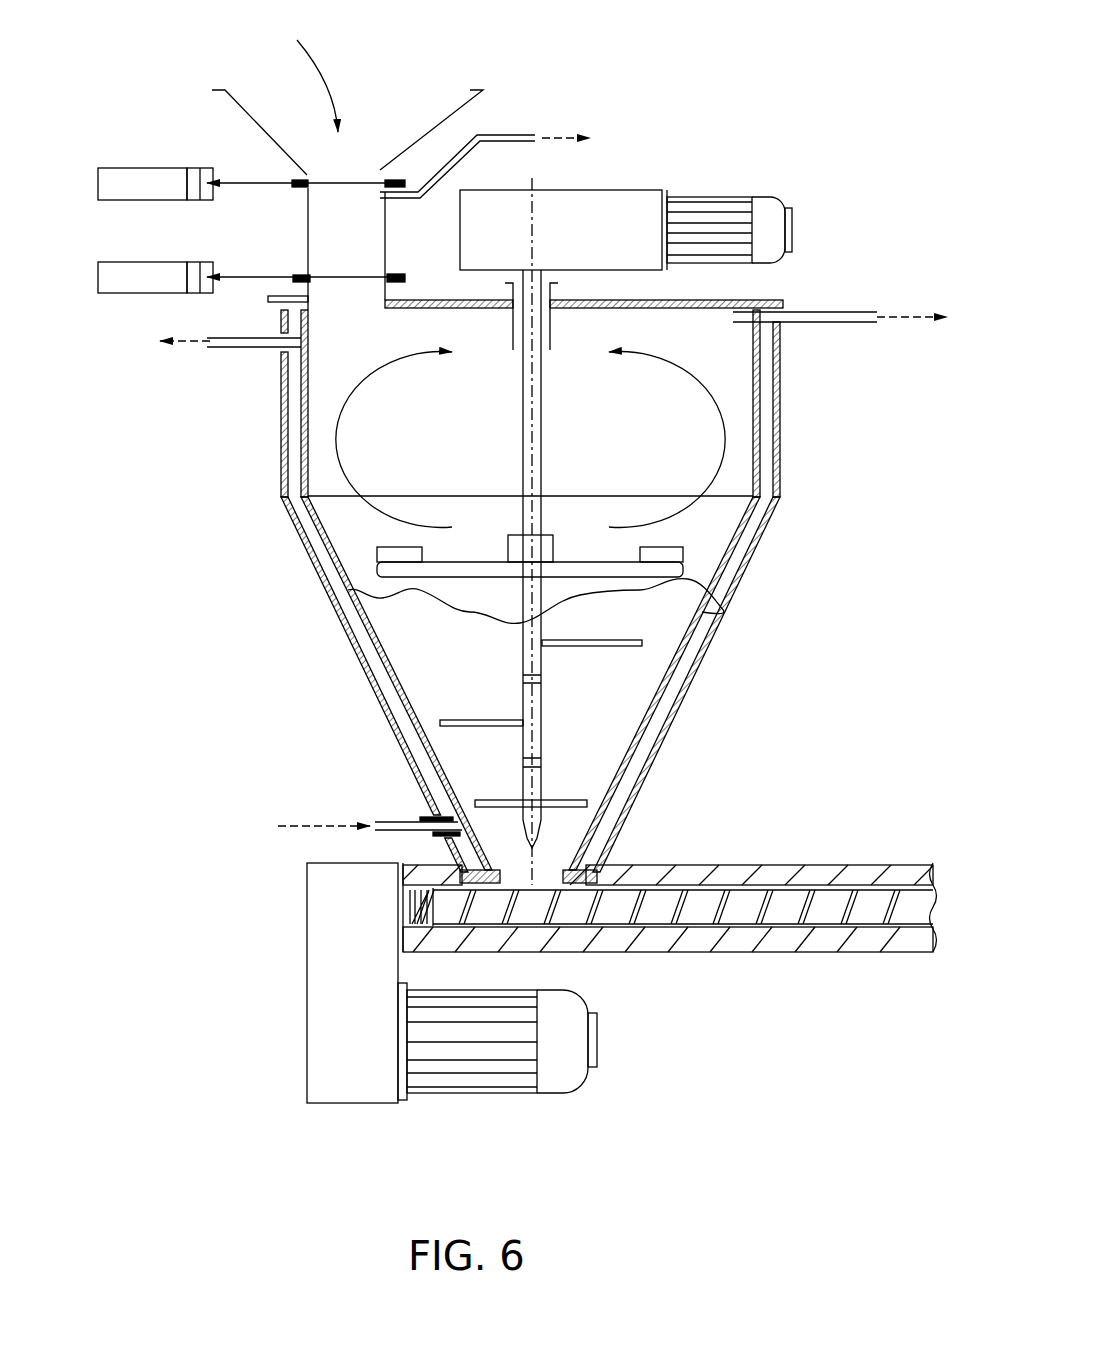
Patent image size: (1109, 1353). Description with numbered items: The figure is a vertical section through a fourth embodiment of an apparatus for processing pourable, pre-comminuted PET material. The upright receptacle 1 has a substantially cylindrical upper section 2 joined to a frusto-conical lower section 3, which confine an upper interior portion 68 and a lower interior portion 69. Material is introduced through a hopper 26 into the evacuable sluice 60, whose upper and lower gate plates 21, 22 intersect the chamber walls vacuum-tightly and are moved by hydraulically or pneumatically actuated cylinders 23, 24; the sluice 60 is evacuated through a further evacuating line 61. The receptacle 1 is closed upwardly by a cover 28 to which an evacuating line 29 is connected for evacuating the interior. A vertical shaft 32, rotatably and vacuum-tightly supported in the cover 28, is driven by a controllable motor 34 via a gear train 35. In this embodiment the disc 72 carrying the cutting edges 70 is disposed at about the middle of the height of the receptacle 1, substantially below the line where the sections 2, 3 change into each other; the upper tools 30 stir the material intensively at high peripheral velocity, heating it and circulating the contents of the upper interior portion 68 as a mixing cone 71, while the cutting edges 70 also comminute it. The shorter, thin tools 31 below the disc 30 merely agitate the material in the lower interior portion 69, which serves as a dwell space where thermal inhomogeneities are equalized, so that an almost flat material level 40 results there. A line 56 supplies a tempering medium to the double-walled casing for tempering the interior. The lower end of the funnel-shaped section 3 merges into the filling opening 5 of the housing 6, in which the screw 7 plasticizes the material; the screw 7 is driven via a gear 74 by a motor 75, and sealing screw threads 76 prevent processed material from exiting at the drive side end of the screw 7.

The receptacle 1 is at (524, 589).
The cylindrical upper section 2 is at (789, 425).
The frusto-conical lower section 3 is at (699, 718).
The filling opening 5 is at (545, 870).
The housing 6 is at (722, 858).
The screw 7 is at (700, 912).
The gate plate 21 is at (355, 188).
The gate plate 22 is at (358, 277).
The cylinder 23 is at (143, 193).
The cylinder 24 is at (138, 273).
The hopper 26 is at (430, 133).
The cover 28 is at (467, 308).
The evacuating line 29 is at (817, 322).
The tools 30 is at (440, 578).
The tools 31 is at (562, 798).
The shaft 32 is at (545, 440).
The motor 34 is at (703, 233).
The gear train 35 is at (598, 233).
The material level 40 is at (652, 606).
The line 56 is at (420, 825).
The sluice 60 is at (300, 233).
The evacuating line 61 is at (512, 137).
The upper interior portion 68 is at (493, 482).
The lower interior portion 69 is at (488, 682).
The cutting edges 70 is at (395, 557).
The mixing cone 71 is at (365, 382).
The disc 72 is at (575, 567).
The gear 74 is at (365, 983).
The motor 75 is at (500, 1037).
The sealing screw threads 76 is at (410, 910).